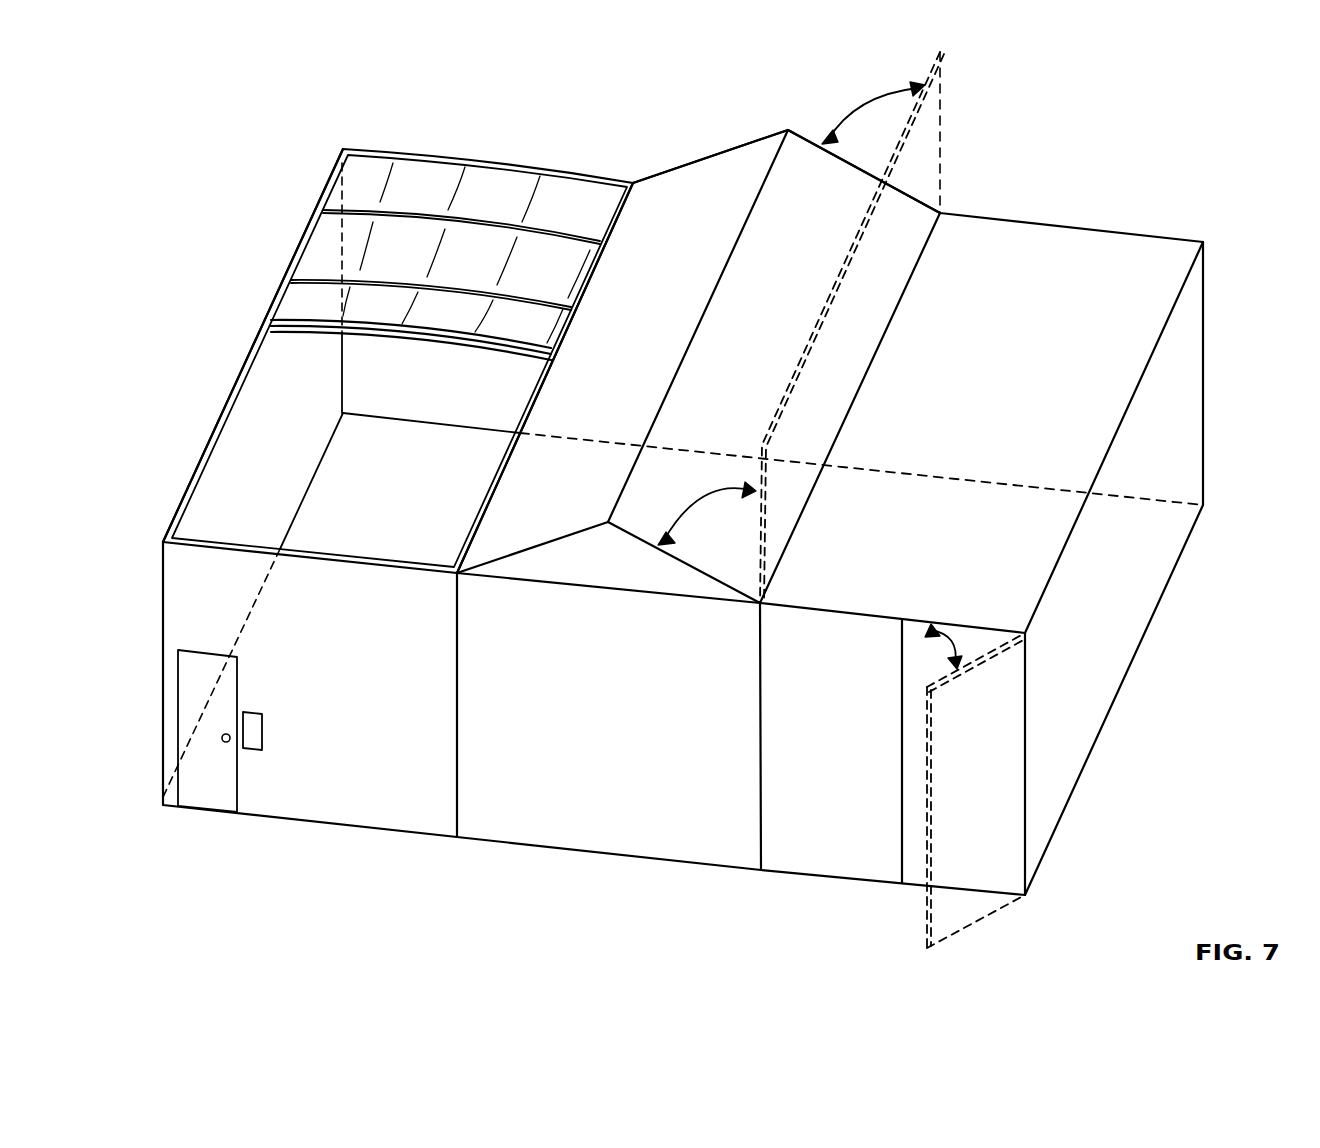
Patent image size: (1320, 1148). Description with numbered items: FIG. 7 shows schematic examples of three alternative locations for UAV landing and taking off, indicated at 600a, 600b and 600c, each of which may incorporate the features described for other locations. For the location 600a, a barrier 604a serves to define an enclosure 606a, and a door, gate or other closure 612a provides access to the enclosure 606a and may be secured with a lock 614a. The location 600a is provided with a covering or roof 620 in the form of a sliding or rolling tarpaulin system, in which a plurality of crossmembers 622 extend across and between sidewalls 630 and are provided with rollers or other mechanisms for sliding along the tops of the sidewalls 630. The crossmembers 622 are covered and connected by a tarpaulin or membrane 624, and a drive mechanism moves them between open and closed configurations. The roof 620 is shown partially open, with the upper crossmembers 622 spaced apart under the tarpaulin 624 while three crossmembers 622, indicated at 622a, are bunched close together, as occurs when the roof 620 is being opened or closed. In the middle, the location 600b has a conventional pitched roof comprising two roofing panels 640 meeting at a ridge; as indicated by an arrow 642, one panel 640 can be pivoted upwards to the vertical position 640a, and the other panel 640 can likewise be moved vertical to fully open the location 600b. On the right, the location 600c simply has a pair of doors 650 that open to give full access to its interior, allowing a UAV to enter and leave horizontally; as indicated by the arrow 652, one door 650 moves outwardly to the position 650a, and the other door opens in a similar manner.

The location 600a is at (395, 321).
The location 600b is at (728, 322).
The location 600c is at (1068, 208).
The barrier 604a is at (207, 445).
The enclosure 606a is at (223, 408).
The closure 612a is at (210, 782).
The lock 614a is at (257, 735).
The covering or roof 620 is at (392, 233).
The crossmembers 622 is at (365, 210).
The bunched crossmembers 622a is at (266, 333).
The tarpaulin or membrane 624 is at (427, 180).
The sidewalls 630 is at (307, 228).
The roofing panels 640 is at (793, 205).
The roofing panel vertical position 640a is at (942, 120).
The arrow 642 is at (867, 102).
The doors 650 is at (915, 860).
The door open position 650a is at (970, 928).
The arrow 652 is at (935, 650).